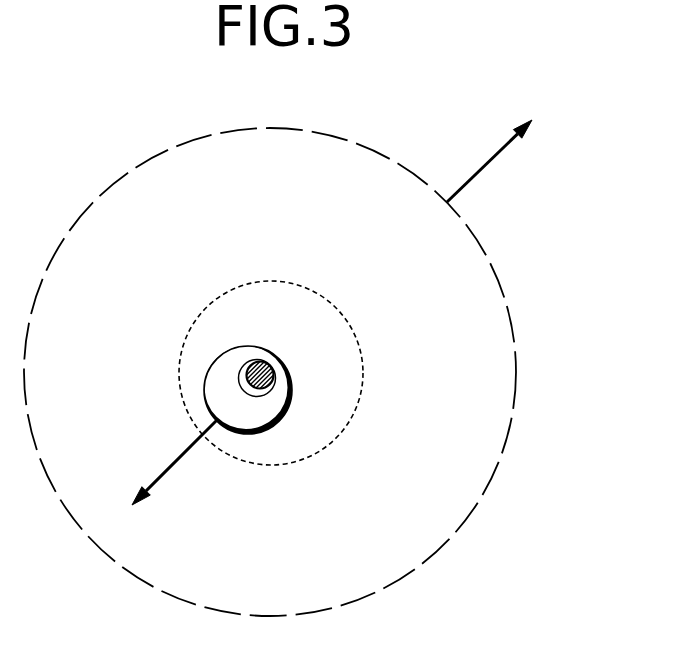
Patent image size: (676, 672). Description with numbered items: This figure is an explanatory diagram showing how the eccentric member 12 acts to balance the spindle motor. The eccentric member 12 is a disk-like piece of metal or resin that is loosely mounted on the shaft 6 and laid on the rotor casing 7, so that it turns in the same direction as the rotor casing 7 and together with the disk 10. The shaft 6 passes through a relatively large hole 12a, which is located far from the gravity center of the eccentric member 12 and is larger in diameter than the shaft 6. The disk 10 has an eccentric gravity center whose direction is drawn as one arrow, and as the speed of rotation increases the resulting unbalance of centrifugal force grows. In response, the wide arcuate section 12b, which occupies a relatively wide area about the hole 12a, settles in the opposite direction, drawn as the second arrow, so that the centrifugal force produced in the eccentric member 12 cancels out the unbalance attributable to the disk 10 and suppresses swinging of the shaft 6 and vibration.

The disk 10 is at (515, 407).
The rotor casing 7 is at (355, 332).
The eccentric member 12 is at (283, 395).
The hole 12a is at (239, 380).
The wide arcuate section 12b is at (250, 418).
The shaft 6 is at (261, 358).